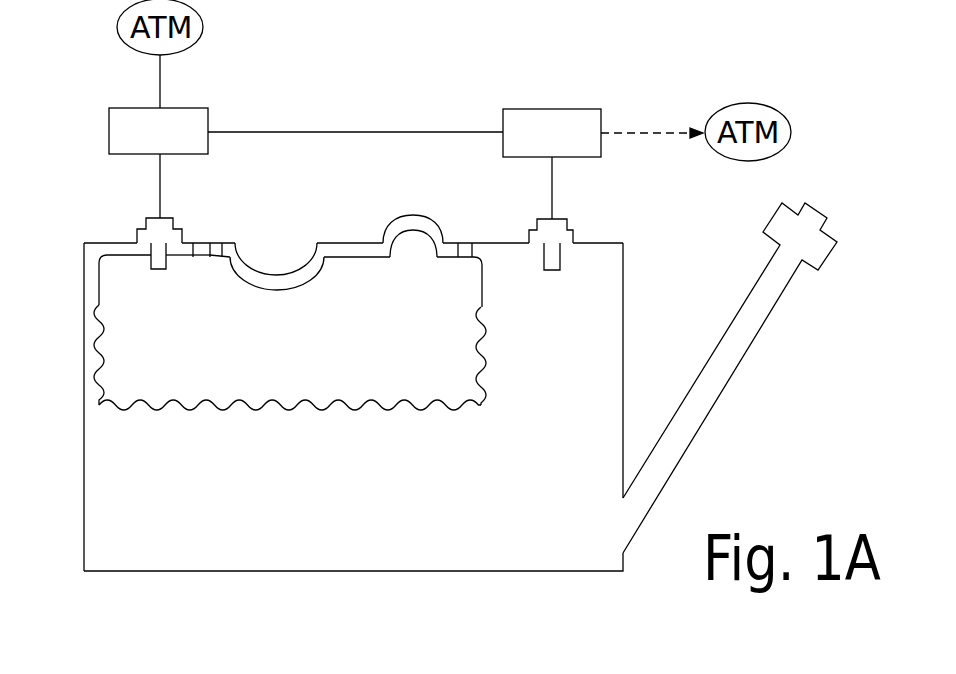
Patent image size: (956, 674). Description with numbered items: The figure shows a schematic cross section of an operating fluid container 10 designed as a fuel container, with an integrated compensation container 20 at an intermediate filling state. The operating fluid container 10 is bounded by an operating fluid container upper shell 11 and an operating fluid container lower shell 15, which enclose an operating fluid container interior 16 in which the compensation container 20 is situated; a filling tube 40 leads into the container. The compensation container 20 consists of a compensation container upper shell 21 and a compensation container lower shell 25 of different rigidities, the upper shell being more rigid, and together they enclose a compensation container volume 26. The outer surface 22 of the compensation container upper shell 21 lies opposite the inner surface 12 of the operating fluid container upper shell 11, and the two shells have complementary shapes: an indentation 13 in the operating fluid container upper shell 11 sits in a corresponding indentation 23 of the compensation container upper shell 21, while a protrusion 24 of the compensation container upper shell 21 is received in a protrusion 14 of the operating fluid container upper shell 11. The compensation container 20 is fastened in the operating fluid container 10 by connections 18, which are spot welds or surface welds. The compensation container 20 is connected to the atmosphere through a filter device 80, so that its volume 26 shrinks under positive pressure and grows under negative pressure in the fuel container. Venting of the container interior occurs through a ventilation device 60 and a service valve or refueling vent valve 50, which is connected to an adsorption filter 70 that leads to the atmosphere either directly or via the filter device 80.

The operating fluid container 10 is at (357, 426).
The operating fluid container upper shell 11 is at (615, 260).
The inner surface 12 is at (356, 223).
The indentation 13 is at (279, 264).
The protrusion 14 is at (417, 221).
The operating fluid container lower shell 15 is at (458, 573).
The operating fluid container interior 16 is at (120, 513).
The connection 18 is at (221, 252).
The compensation container 20 is at (145, 360).
The compensation container upper shell 21 is at (328, 331).
The outer surface 22 is at (194, 252).
The indentation 23 is at (268, 285).
The protrusion 24 is at (411, 243).
The compensation container lower shell 25 is at (445, 409).
The compensation container volume 26 is at (314, 350).
The filling tube 40 is at (737, 345).
The service valve and/or refueling vent valve 50 is at (553, 242).
The ventilation device 60 is at (153, 225).
The adsorption filter 70 is at (586, 121).
The filter device 80 is at (190, 125).